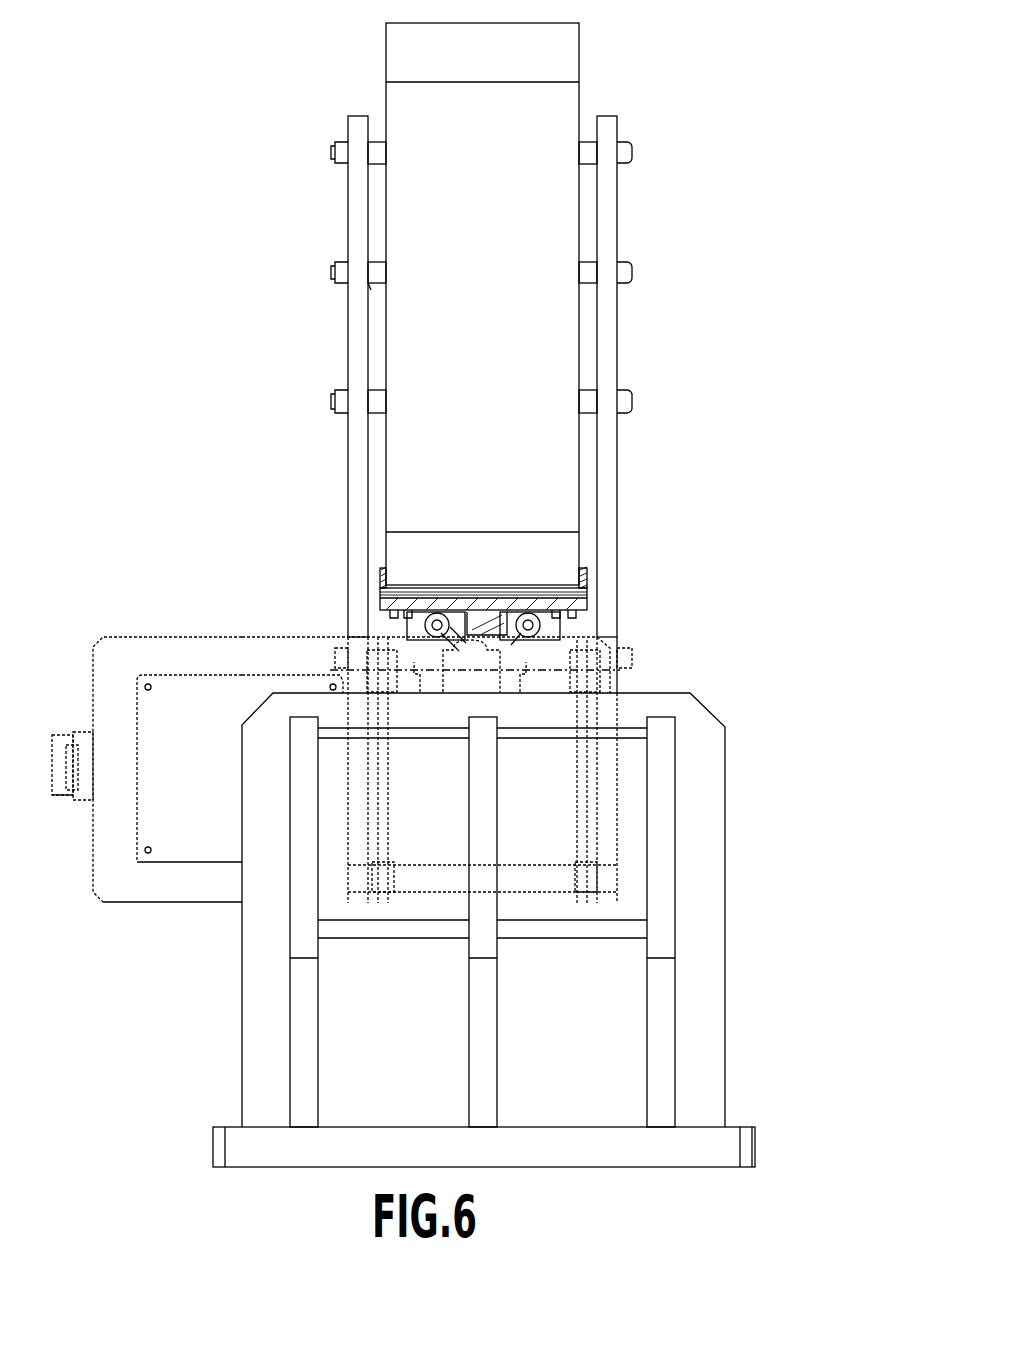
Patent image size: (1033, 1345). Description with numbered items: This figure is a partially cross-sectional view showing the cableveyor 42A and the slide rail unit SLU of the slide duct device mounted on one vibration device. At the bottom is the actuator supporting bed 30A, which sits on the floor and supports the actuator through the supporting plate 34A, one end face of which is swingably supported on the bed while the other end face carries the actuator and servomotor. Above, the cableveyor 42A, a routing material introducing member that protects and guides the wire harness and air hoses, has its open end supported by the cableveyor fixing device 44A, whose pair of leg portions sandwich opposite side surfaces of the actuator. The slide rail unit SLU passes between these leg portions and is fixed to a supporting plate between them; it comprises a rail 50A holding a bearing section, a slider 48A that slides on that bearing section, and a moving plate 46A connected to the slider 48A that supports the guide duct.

The actuator supporting bed 30A is at (725, 975).
The supporting plate 34A is at (187, 848).
The cableveyor 42A is at (580, 50).
The cableveyor fixing device 44A is at (617, 466).
The moving plate 46A is at (573, 600).
The slider 48A is at (553, 636).
The rail 50A is at (505, 660).
The slide rail unit SLU is at (563, 599).